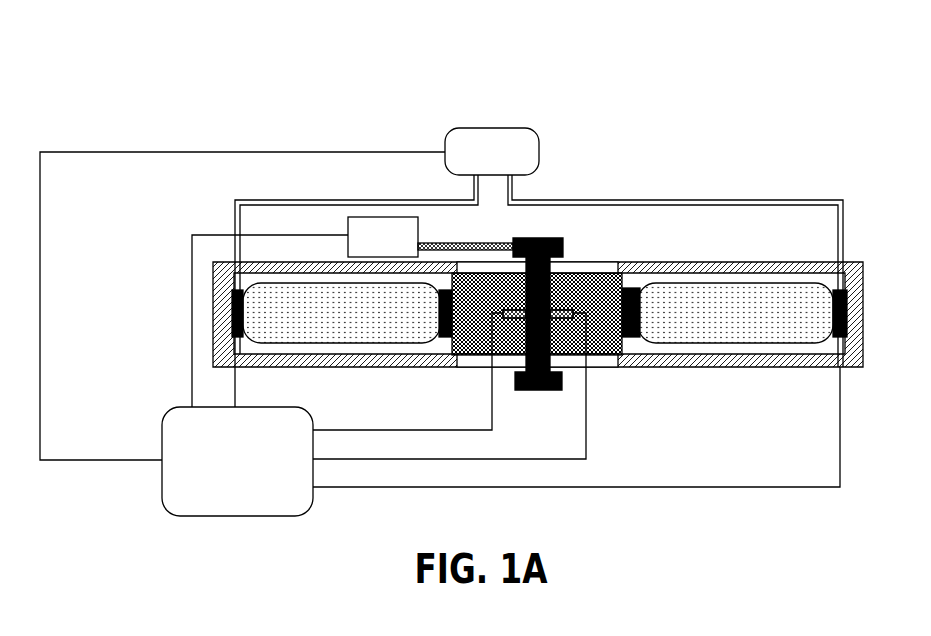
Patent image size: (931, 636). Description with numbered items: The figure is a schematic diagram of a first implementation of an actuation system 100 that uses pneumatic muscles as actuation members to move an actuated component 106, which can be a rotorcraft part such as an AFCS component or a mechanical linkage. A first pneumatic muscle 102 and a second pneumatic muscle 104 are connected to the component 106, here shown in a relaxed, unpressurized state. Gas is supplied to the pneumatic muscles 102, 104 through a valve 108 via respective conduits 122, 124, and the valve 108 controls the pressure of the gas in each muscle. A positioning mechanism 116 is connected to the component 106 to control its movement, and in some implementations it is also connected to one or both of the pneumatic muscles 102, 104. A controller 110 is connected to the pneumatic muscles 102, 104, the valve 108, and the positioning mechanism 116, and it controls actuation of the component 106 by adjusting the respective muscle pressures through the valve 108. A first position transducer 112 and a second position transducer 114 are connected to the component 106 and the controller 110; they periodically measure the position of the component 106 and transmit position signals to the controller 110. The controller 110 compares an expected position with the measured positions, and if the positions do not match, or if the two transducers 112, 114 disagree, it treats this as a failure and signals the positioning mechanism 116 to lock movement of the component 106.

The actuation system 100 is at (132, 49).
The first pneumatic muscle 102 is at (338, 321).
The second pneumatic muscle 104 is at (707, 321).
The actuated component 106 is at (543, 240).
The valve 108 is at (492, 151).
The controller 110 is at (374, 375).
The first position transducer 112 is at (506, 306).
The second position transducer 114 is at (580, 297).
The positioning mechanism 116 is at (430, 237).
The conduit 122 is at (296, 200).
The conduit 124 is at (702, 200).